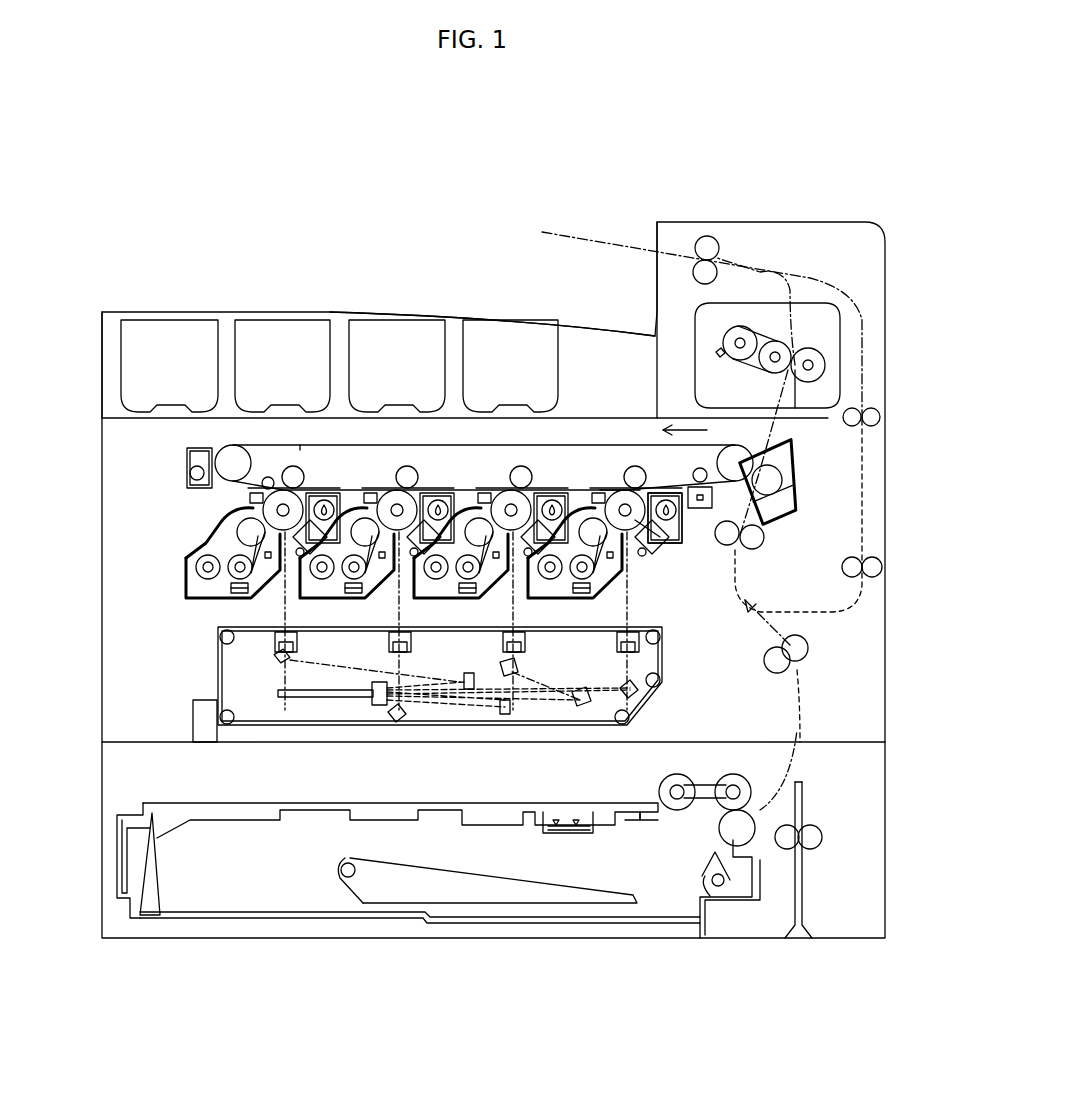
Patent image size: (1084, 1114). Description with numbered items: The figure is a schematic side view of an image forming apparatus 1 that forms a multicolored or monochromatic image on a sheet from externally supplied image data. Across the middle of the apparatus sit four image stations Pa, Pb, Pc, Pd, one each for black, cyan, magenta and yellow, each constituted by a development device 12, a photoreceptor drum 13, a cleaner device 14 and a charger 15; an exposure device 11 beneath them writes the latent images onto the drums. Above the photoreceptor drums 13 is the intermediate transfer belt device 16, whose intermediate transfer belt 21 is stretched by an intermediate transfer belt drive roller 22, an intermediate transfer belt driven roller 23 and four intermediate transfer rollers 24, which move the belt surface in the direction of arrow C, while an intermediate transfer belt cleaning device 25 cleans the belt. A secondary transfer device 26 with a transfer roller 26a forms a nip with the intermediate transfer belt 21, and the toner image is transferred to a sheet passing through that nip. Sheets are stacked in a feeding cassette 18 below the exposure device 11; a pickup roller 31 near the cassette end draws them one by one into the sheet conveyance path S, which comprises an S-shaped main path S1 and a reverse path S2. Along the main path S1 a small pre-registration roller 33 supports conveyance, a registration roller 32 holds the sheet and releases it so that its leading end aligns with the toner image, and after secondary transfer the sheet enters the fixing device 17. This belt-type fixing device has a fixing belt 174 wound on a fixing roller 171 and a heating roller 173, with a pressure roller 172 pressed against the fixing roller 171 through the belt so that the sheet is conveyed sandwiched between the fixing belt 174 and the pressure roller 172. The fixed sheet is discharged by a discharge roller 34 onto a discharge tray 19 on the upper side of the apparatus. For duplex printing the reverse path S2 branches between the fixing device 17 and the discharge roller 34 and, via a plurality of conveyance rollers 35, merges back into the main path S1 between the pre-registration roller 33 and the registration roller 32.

The image forming apparatus 1 is at (512, 152).
The exposure device 11 is at (667, 670).
The development device 12 is at (560, 603).
The photoreceptor drum 13 is at (617, 488).
The cleaner device 14 is at (682, 517).
The charger 15 is at (653, 545).
The intermediate transfer belt device 16 is at (560, 440).
The fixing device 17 is at (840, 315).
The fixing roller 171 is at (800, 337).
The pressure roller 172 is at (827, 360).
The heating roller 173 is at (740, 343).
The fixing belt 174 is at (720, 360).
The feeding cassette 18 is at (117, 857).
The discharge tray 19 is at (255, 310).
The intermediate transfer belt 21 is at (590, 440).
The intermediate transfer belt drive roller 22 is at (737, 457).
The intermediate transfer belt driven roller 23 is at (233, 457).
The intermediate transfer roller 24 is at (410, 467).
The intermediate transfer belt cleaning device 25 is at (187, 470).
The secondary transfer device 26 is at (790, 513).
The transfer roller 26a is at (773, 485).
The pickup roller 31 is at (685, 775).
The registration roller 32 is at (755, 542).
The pre-registration roller 33 is at (802, 647).
The discharge roller 34 is at (707, 236).
The conveyance roller 35 is at (872, 417).
The main path S1 is at (800, 337).
The reverse path S2 is at (867, 383).
The sheet conveyance path S is at (738, 593).
The arrow indicating belt movement direction C is at (693, 430).
The image station Pa is at (603, 470).
The image station Pb is at (475, 473).
The image station Pc is at (365, 470).
The image station Pd is at (178, 578).